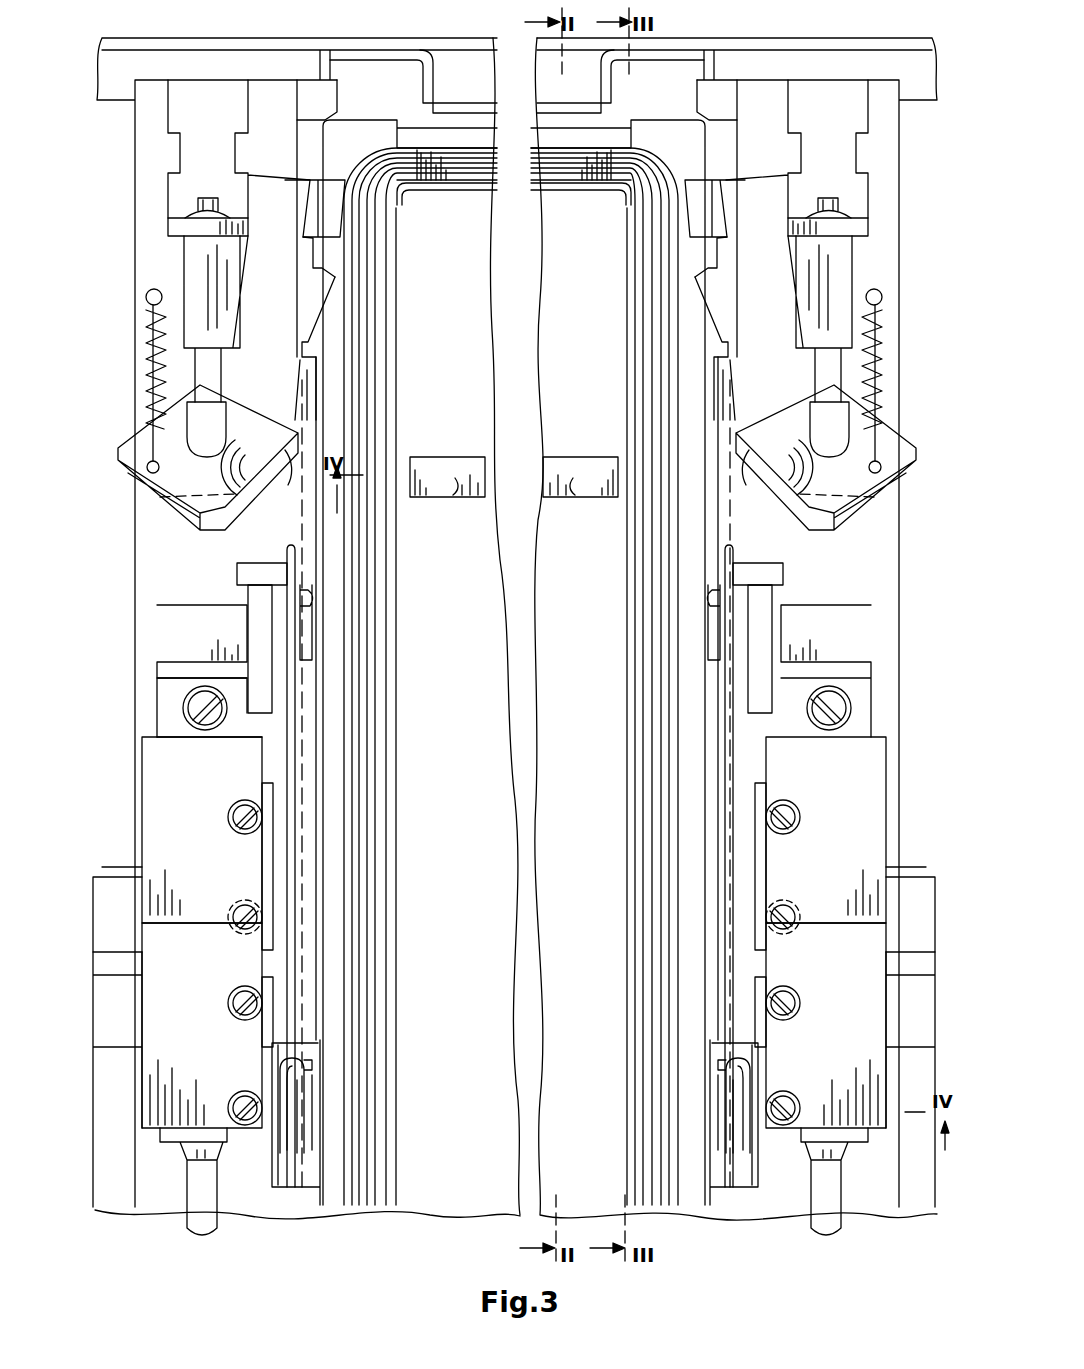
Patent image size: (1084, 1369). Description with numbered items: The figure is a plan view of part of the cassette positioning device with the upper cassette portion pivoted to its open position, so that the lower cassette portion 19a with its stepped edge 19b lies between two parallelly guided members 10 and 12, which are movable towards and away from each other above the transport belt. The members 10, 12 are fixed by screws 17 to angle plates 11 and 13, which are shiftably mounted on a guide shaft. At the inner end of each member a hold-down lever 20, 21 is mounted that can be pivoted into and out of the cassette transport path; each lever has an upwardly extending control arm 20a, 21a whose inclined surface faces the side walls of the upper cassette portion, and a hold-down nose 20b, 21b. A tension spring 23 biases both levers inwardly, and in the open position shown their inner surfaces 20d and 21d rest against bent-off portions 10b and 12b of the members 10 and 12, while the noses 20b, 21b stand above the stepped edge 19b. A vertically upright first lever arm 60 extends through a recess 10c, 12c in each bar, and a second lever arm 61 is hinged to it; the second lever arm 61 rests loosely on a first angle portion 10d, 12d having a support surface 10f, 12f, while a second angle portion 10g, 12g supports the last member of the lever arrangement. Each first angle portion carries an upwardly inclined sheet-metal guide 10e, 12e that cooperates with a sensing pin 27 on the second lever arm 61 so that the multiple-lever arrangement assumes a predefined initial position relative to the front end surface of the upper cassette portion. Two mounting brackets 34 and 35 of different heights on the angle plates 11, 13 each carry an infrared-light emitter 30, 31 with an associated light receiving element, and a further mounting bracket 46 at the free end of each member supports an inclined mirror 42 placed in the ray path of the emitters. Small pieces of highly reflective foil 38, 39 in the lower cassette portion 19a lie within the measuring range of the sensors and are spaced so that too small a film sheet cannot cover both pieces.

The member 10 is at (843, 588).
The bent-off portion 10b is at (688, 352).
The recess 10c is at (735, 1178).
The first angle portion 10d is at (800, 640).
The sheet-metal guide 10e is at (740, 650).
The support surface 10f is at (713, 600).
The second angle portion 10g is at (715, 105).
The angle plate 11 is at (690, 800).
The member 12 is at (178, 585).
The bent-off portion 12b is at (305, 375).
The recess 12c is at (290, 1170).
The first angle portion 12d is at (200, 625).
The sheet-metal guide 12e is at (258, 668).
The support surface 12f is at (317, 590).
The second angle portion 12g is at (318, 103).
The angle plate 13 is at (245, 728).
The screws 17 is at (183, 700).
The lower cassette portion 19a is at (477, 952).
The stepped edge 19b is at (340, 318).
The hold-down lever 20 is at (853, 273).
The control arm 20a is at (695, 200).
The hold-down nose 20b is at (690, 272).
The inner surface 20d is at (720, 405).
The hold-down lever 21 is at (300, 253).
The control arm 21a is at (330, 220).
The hold-down nose 21b is at (313, 297).
The inner surface 21d is at (297, 410).
The tension spring 23 is at (887, 342).
The sensing pin 27 is at (250, 580).
The infrared-light emitter 30 is at (222, 1047).
The infrared-light emitter 31 is at (230, 858).
The mounting bracket 34 is at (120, 1025).
The mounting bracket 35 is at (122, 830).
The foil 38 is at (560, 500).
The foil 39 is at (455, 500).
The mirror 42 is at (200, 505).
The mounting bracket 46 is at (200, 152).
The first lever arm 60 is at (278, 1118).
The second lever arm 61 is at (290, 803).